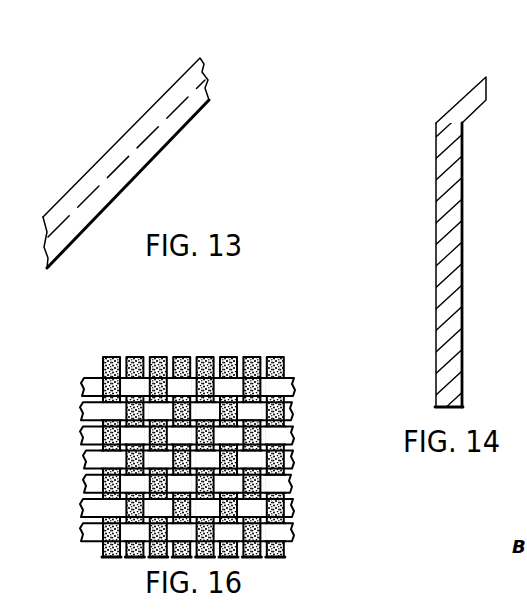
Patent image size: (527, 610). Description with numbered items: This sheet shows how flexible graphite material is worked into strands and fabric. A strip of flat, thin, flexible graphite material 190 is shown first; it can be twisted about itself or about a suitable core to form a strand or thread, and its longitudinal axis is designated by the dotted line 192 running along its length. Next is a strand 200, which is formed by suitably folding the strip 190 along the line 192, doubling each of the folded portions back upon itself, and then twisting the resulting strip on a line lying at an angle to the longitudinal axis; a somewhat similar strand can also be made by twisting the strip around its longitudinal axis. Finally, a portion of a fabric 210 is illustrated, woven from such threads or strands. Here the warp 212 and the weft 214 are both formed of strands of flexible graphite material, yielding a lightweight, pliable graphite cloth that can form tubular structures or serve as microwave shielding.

In FIG. 13, the strip of flat, thin, flexible graphite material 190 is at (146, 163).
In FIG. 14, the strip of flat, thin, flexible graphite material 190 is at (480, 231).
In FIG. 13, the dotted line designating the longitudinal axis 192 is at (170, 117).
In FIG. 14, the strand 200 is at (463, 268).
In FIG. 16, the fabric 210 is at (216, 432).
In FIG. 16, the warp 212 is at (178, 360).
In FIG. 16, the weft 214 is at (187, 459).